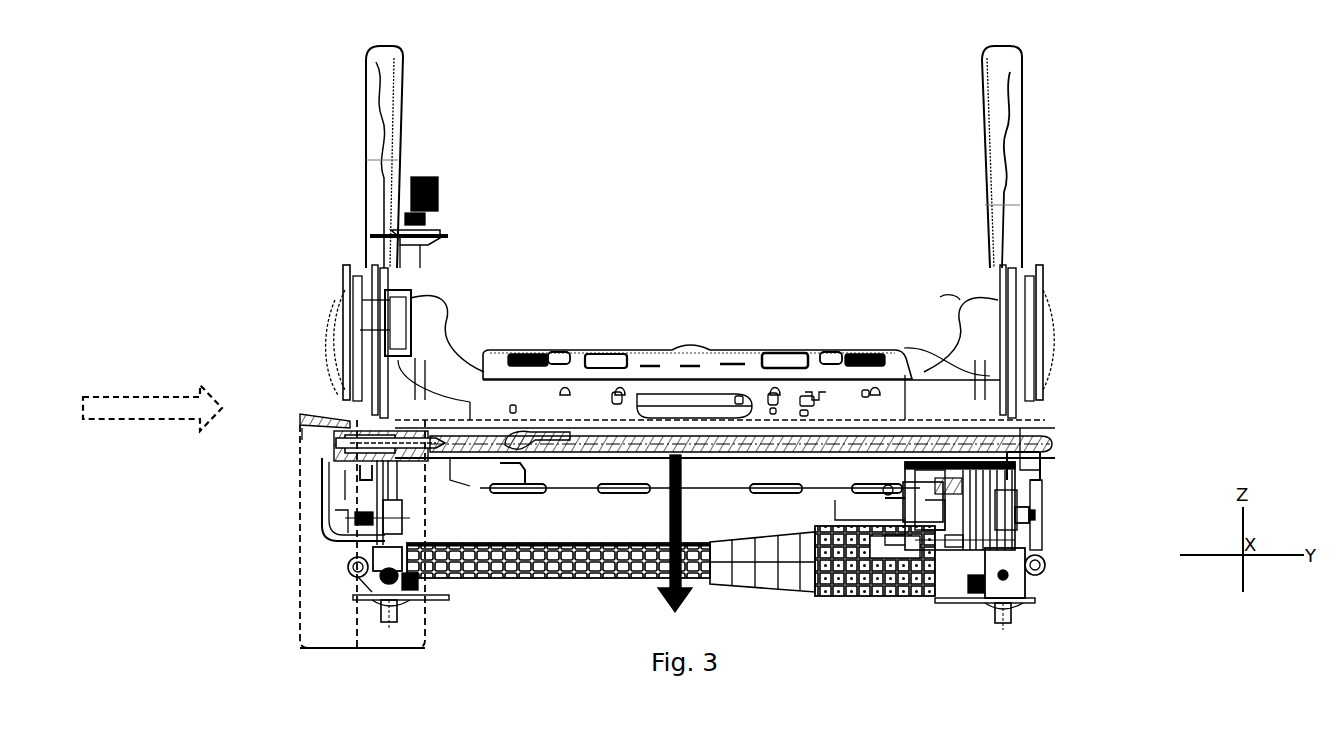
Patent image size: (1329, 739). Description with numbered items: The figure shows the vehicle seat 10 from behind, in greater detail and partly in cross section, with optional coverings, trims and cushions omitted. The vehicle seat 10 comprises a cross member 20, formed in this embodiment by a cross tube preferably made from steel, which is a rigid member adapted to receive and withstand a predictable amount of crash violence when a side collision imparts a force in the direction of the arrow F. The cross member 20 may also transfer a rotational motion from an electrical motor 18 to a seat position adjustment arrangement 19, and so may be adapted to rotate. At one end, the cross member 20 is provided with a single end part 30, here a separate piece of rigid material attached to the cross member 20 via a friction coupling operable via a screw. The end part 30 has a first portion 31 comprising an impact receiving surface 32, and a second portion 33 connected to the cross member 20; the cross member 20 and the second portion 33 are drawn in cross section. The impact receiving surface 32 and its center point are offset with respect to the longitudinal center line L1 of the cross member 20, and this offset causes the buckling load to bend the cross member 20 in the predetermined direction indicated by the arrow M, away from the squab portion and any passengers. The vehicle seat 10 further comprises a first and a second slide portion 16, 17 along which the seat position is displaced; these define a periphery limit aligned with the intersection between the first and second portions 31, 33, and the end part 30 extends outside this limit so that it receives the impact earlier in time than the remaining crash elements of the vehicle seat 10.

The vehicle seat 10 is at (292, 163).
The first slide portion 16 is at (420, 592).
The second slide portion 17 is at (1028, 590).
The electrical motor 18 is at (1013, 503).
The seat position adjustment arrangement 19 is at (1070, 477).
The cross member 20 is at (468, 406).
The end part 30 is at (300, 460).
The first portion 31 is at (328, 648).
The impact receiving surface 32 is at (300, 417).
The second portion 33 is at (390, 648).
The longitudinal center line L1 is at (302, 433).
The bend direction arrow M is at (655, 584).
The force arrow F is at (155, 395).